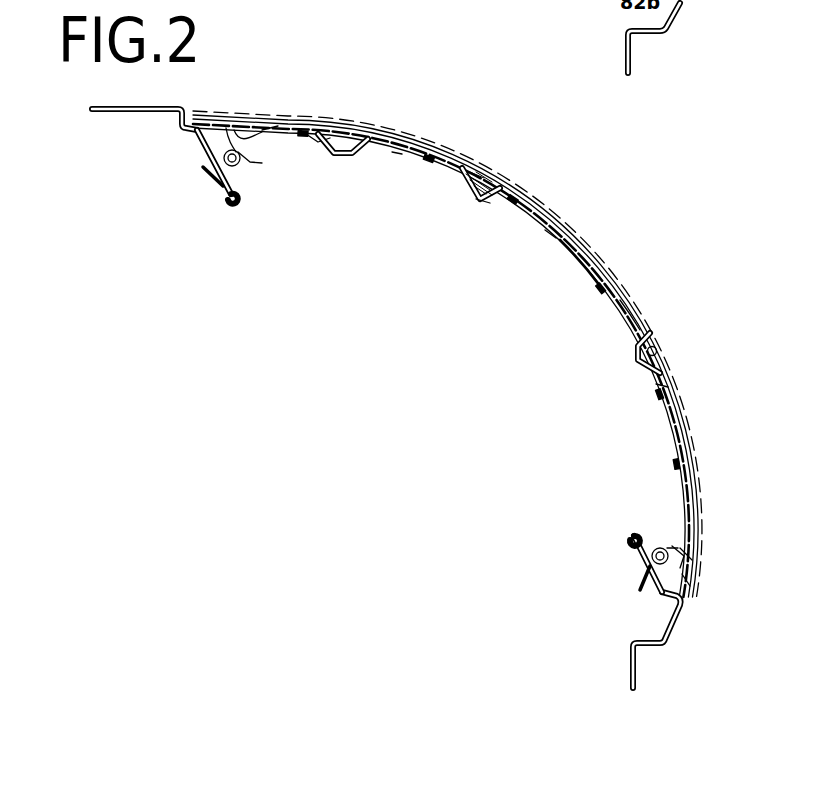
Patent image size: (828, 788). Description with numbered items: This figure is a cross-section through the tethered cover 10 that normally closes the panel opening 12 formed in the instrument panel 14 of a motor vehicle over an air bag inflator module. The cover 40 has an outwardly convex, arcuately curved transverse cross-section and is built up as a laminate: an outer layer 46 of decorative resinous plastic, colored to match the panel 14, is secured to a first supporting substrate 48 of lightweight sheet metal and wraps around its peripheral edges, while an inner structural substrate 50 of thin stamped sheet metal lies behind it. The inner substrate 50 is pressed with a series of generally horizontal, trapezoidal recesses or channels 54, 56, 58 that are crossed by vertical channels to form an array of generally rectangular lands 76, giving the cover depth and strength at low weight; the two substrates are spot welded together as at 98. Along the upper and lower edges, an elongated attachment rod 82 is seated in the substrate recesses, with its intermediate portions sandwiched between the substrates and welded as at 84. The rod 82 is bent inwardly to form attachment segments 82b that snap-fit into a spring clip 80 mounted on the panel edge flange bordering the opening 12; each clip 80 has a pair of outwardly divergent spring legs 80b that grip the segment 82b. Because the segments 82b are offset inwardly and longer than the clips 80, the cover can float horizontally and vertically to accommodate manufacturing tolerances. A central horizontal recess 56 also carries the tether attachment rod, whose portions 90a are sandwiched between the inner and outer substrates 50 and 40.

The tethered cover 10 is at (594, 229).
The panel opening 12 is at (226, 196).
The instrument panel 14 is at (122, 108).
The tethered cover 40 is at (626, 266).
The outer layer 46 is at (650, 304).
The first supporting substrate 48 is at (659, 352).
The inner structural substrate 50 is at (590, 255).
The horizontal channel 54 is at (340, 130).
The central horizontal recess 56 is at (470, 168).
The horizontal channel 58 is at (665, 341).
The land 76 is at (316, 144).
The spring clip 80 is at (238, 166).
The spring leg 80b is at (246, 160).
The attachment rod 82 is at (264, 126).
The attachment segment 82b is at (274, 128).
The weld 84 is at (232, 128).
The tether attachment rod portion 90a is at (484, 197).
The spot weld 98 is at (300, 136).